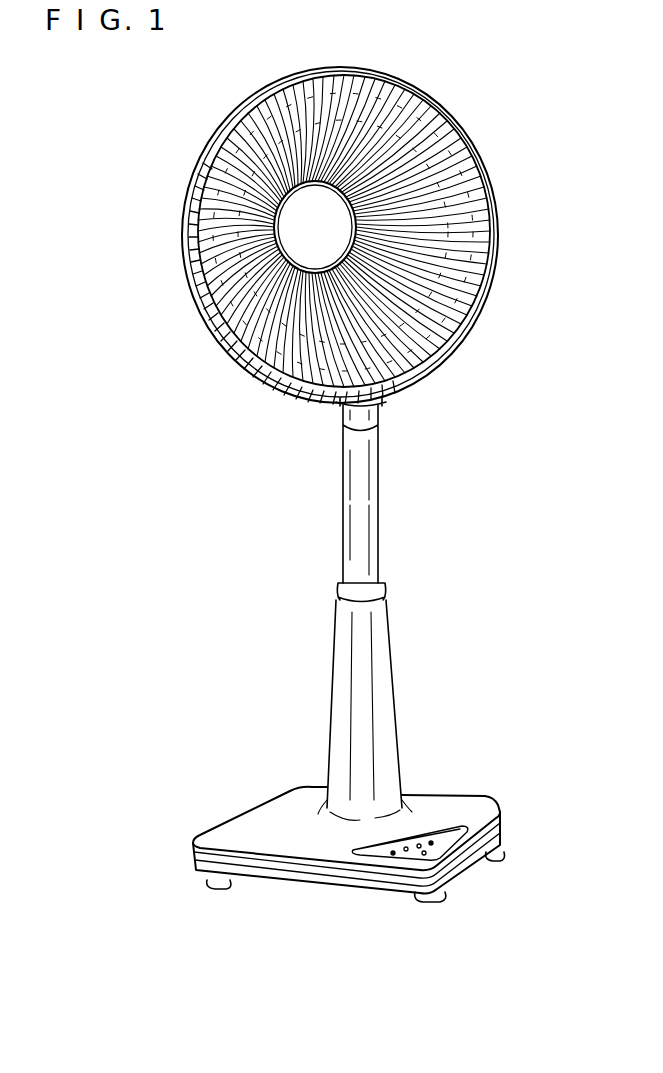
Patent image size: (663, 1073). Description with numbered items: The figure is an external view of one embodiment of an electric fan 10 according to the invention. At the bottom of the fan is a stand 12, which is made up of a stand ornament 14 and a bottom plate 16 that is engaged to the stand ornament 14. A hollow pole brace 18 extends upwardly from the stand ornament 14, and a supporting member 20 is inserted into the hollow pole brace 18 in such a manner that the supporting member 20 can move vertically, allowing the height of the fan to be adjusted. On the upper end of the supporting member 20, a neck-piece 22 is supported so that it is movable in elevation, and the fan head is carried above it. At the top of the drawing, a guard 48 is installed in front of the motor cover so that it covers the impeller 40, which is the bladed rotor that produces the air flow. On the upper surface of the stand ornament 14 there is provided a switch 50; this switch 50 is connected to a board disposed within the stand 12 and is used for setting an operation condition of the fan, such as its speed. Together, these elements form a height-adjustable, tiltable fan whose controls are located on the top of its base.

The electric fan 10 is at (229, 472).
The stand 12 is at (449, 782).
The stand ornament 14 is at (283, 850).
The bottom plate 16 is at (387, 887).
The pole brace 18 is at (388, 702).
The supporting member 20 is at (372, 502).
The neck-piece 22 is at (397, 383).
The impeller 40 is at (490, 183).
The guard 48 is at (423, 112).
The switch 50 is at (445, 840).